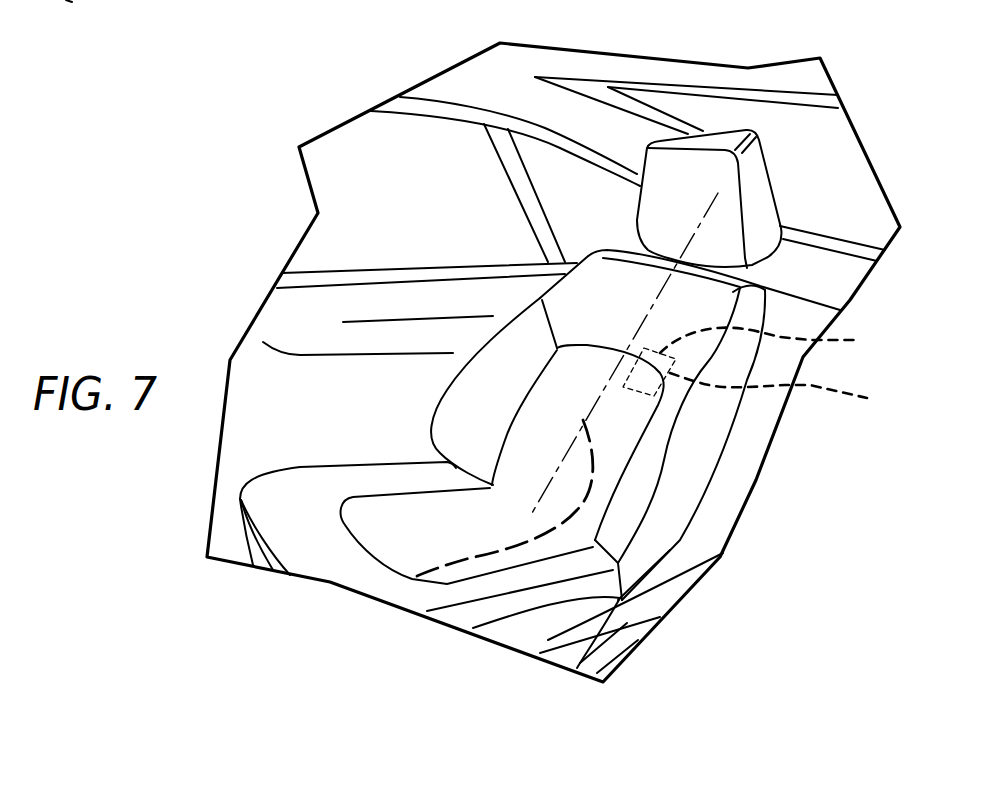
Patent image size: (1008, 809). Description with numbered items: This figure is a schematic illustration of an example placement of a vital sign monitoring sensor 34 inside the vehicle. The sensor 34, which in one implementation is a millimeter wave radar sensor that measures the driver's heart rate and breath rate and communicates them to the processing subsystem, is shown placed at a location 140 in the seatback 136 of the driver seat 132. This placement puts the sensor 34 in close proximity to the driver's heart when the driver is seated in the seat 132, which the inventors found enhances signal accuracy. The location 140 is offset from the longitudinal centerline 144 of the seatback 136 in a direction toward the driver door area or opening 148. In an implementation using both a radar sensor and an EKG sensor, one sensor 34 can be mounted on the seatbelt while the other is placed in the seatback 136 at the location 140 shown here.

The driver seat 132 is at (285, 498).
The location 140 is at (782, 343).
The sensor 34 is at (761, 384).
The seatback 136 is at (667, 440).
The longitudinal centerline 144 is at (410, 580).
The driver door area or opening 148 is at (605, 642).